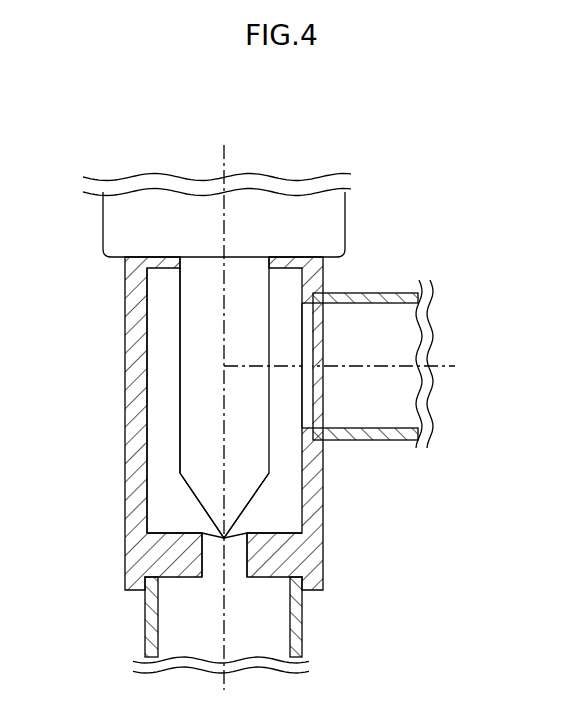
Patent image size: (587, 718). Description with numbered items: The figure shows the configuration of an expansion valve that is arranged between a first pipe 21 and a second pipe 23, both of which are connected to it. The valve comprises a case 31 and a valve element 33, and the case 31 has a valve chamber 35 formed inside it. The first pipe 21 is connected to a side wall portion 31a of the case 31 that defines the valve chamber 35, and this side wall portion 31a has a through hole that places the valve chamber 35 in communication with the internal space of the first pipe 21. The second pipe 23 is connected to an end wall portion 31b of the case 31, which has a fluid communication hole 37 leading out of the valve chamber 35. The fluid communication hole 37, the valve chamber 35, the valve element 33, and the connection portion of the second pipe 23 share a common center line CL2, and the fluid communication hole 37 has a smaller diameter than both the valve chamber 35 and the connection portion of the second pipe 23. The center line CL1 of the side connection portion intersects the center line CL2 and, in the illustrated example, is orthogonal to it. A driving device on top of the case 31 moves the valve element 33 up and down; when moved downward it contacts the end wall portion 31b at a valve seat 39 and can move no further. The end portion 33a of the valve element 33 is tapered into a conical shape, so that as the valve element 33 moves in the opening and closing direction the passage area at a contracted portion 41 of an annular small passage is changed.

The first pipe 21 is at (383, 293).
The second pipe 23 is at (145, 622).
The case 31 is at (125, 440).
The side wall portion 31a is at (322, 468).
The end wall portion 31b is at (172, 533).
The valve element 33 is at (178, 393).
The end portion 33a is at (262, 490).
The valve chamber 35 is at (162, 338).
The fluid communication hole 37 is at (235, 563).
The valve seat 39 is at (247, 532).
The contracted portion 41 is at (216, 536).
The center line CL1 is at (393, 368).
The center line CL2 is at (224, 163).